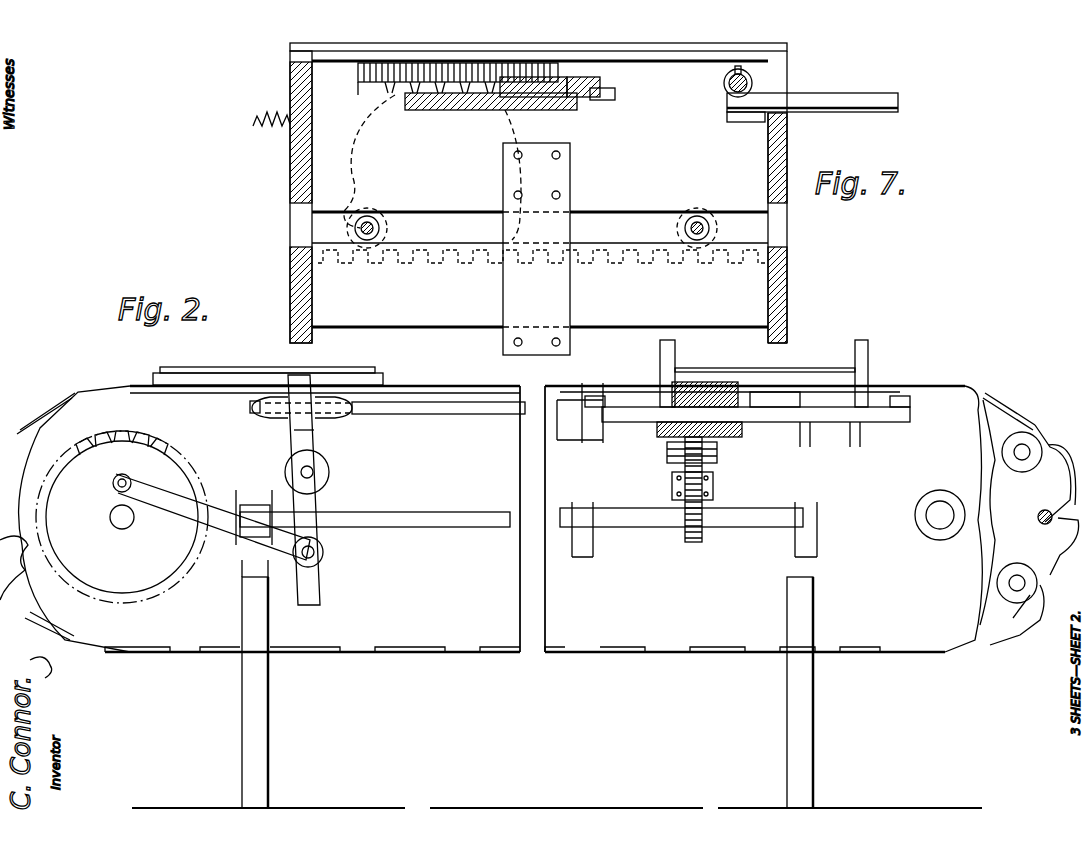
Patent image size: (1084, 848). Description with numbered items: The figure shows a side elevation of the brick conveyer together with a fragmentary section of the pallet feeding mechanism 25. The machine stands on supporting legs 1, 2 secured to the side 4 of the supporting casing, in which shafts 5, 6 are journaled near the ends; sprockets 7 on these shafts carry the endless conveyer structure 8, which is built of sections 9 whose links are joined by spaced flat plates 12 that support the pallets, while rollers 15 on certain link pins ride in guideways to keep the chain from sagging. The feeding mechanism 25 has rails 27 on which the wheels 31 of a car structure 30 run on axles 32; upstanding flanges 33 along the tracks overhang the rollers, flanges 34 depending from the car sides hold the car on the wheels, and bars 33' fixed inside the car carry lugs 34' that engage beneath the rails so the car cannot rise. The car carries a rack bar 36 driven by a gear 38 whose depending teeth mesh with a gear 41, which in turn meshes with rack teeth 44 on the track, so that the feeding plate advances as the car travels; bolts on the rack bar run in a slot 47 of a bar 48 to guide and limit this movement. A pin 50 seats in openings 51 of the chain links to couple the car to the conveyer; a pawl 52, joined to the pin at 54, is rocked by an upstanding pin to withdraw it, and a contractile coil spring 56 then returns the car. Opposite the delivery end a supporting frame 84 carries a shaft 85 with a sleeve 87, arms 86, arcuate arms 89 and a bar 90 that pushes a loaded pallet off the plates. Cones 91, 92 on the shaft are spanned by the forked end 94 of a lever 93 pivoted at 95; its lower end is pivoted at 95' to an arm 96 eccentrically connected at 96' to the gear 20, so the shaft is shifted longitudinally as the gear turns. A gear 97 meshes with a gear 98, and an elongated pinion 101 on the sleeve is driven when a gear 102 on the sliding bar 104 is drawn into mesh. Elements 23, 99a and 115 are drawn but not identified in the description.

In FIG. 2, the supporting leg 1 is at (807, 738).
In FIG. 2, the supporting leg 2 is at (268, 748).
In FIG. 2, the side of supporting casing 4 is at (505, 640).
In FIG. 2, the shaft 5 is at (938, 525).
In FIG. 2, the shaft 6 is at (130, 526).
In FIG. 2, the sprocket 7 is at (1035, 548).
In FIG. 2, the endless conveyer structure 8 is at (1048, 480).
In FIG. 2, the conveyer section 9 is at (943, 385).
In FIG. 2, the flat plate 12 is at (1035, 420).
In FIG. 2, the roller 15 is at (1012, 440).
In FIG. 2, the gear 20 is at (126, 572).
In FIG. 2, the lower rod 23 is at (450, 527).
In FIG. 7, the pallet feeding mechanism 25 is at (787, 150).
In FIG. 7, the rail 27 is at (312, 280).
In FIG. 7, the car structure 30 is at (288, 176).
In FIG. 7, the wheel 31 is at (395, 213).
In FIG. 7, the axle 32 is at (360, 228).
In FIG. 7, the upstanding flange 33 is at (608, 274).
In FIG. 7, the bar 33' is at (490, 283).
In FIG. 7, the flange 34 is at (540, 249).
In FIG. 7, the roller or lug 34' is at (508, 366).
In FIG. 7, the rack bar 36 is at (545, 110).
In FIG. 7, the gear 38 is at (360, 80).
In FIG. 7, the gear 41 is at (348, 170).
In FIG. 7, the rack teeth 44 is at (770, 252).
In FIG. 7, the slot 47 is at (540, 80).
In FIG. 7, the bar 48 is at (512, 82).
In FIG. 7, the pin 50 is at (728, 88).
In FIG. 2, the pin 50 is at (238, 372).
In FIG. 7, the opening 51 is at (752, 80).
In FIG. 7, the pawl 52 is at (795, 100).
In FIG. 7, the connection of pawl to pin 54 is at (600, 100).
In FIG. 7, the contractile coil spring 56 is at (264, 134).
In FIG. 2, the supporting frame 84 is at (848, 425).
In FIG. 2, the shaft 85 is at (490, 408).
In FIG. 2, the arm 86 is at (650, 395).
In FIG. 2, the sleeve 87 is at (762, 392).
In FIG. 2, the arcuate arm 89 is at (660, 352).
In FIG. 2, the bar 90 is at (800, 363).
In FIG. 2, the cone 91 is at (343, 418).
In FIG. 2, the cone 92 is at (268, 418).
In FIG. 2, the arm 93 is at (312, 503).
In FIG. 2, the forked end 94 is at (295, 425).
In FIG. 2, the pivot 95 is at (331, 479).
In FIG. 2, the pivotal connection 95' is at (329, 557).
In FIG. 2, the arm 96 is at (213, 542).
In FIG. 2, the eccentric connection 96' is at (149, 446).
In FIG. 2, the gear 97 is at (698, 542).
In FIG. 2, the gear 98 is at (714, 484).
In FIG. 2, the bracket 99a is at (215, 538).
In FIG. 2, the elongated pinion 101 is at (712, 390).
In FIG. 2, the gear 102 is at (672, 445).
In FIG. 2, the bar 104 is at (720, 458).
In FIG. 2, the pin 115 is at (770, 425).